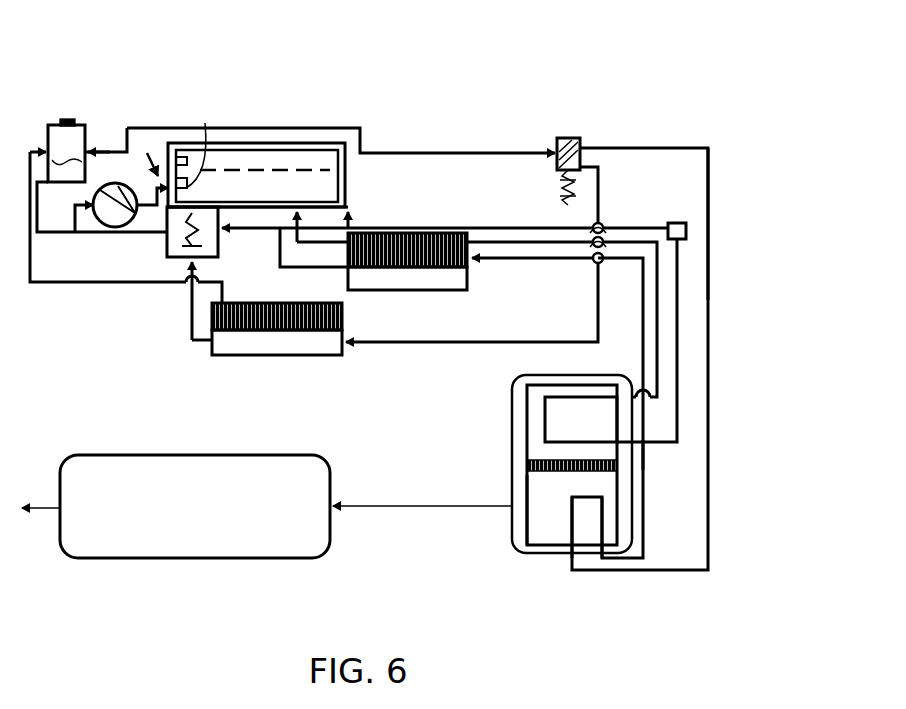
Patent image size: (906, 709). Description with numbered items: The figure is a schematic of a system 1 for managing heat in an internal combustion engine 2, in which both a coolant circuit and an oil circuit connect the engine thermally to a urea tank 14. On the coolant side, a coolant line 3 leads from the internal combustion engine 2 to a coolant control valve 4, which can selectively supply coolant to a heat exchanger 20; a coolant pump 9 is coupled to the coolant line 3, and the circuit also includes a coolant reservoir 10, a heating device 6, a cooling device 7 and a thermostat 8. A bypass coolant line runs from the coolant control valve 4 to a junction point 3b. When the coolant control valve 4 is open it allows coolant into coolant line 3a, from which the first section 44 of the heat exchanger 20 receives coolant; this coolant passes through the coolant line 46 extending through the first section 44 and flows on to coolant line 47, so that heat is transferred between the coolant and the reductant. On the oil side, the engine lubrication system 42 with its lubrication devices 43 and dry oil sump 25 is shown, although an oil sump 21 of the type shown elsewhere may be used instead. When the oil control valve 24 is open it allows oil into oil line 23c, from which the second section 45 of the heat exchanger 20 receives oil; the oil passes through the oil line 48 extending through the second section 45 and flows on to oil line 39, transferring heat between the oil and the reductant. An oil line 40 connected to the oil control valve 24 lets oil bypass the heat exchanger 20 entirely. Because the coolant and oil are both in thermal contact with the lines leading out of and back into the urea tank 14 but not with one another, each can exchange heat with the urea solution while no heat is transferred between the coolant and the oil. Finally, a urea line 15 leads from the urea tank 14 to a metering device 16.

The system 1 is at (740, 138).
The internal combustion engine 2 is at (348, 180).
The coolant line 3 is at (365, 150).
The coolant line 3a is at (710, 365).
The junction point 3b is at (598, 265).
The coolant control valve 4 is at (567, 138).
The heating device 6 is at (470, 282).
The cooling device 7 is at (212, 350).
The thermostat 8 is at (165, 242).
The coolant pump 9 is at (106, 183).
The coolant reservoir 10 is at (68, 120).
The urea tank 14 is at (512, 510).
The urea line 15 is at (395, 508).
The metering device 16 is at (238, 550).
The heat exchanger 20 is at (520, 545).
The oil sump 21 is at (350, 210).
The oil line 23c is at (503, 226).
The oil control valve 24 is at (677, 223).
The dry oil sump 25 is at (262, 210).
The oil line 39 is at (623, 230).
The oil line 40 is at (678, 254).
The engine lubrication system 42 is at (141, 155).
The lubrication devices 43 is at (197, 144).
The first section 44 is at (527, 486).
The second section 45 is at (527, 420).
The coolant line 46 is at (572, 525).
The coolant line 47 is at (643, 525).
The oil line 48 is at (545, 400).